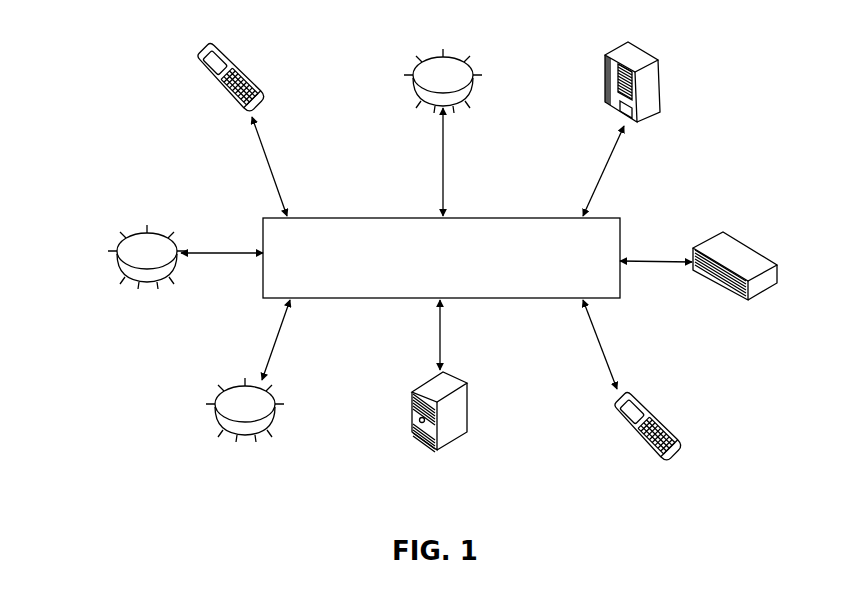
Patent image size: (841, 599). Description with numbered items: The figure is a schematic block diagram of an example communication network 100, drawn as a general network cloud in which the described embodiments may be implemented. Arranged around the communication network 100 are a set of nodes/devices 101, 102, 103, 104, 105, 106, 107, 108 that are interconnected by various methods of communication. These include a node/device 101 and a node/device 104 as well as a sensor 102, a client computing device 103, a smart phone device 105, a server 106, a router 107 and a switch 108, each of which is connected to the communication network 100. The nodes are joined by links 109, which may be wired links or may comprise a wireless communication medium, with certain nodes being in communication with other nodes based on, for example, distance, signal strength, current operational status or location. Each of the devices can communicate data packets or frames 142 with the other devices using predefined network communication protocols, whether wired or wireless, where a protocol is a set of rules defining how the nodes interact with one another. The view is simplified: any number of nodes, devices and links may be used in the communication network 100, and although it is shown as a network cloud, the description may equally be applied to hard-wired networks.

The communication network 100 is at (441, 258).
The node/device 101 is at (262, 63).
The sensor 102 is at (472, 70).
The client computing device 103 is at (660, 84).
The node/device 104 is at (755, 250).
The smart phone device 105 is at (665, 436).
The server 106 is at (420, 386).
The router 107 is at (237, 440).
The switch 108 is at (158, 284).
The link 109 is at (290, 183).
The data packet 142 is at (236, 134).